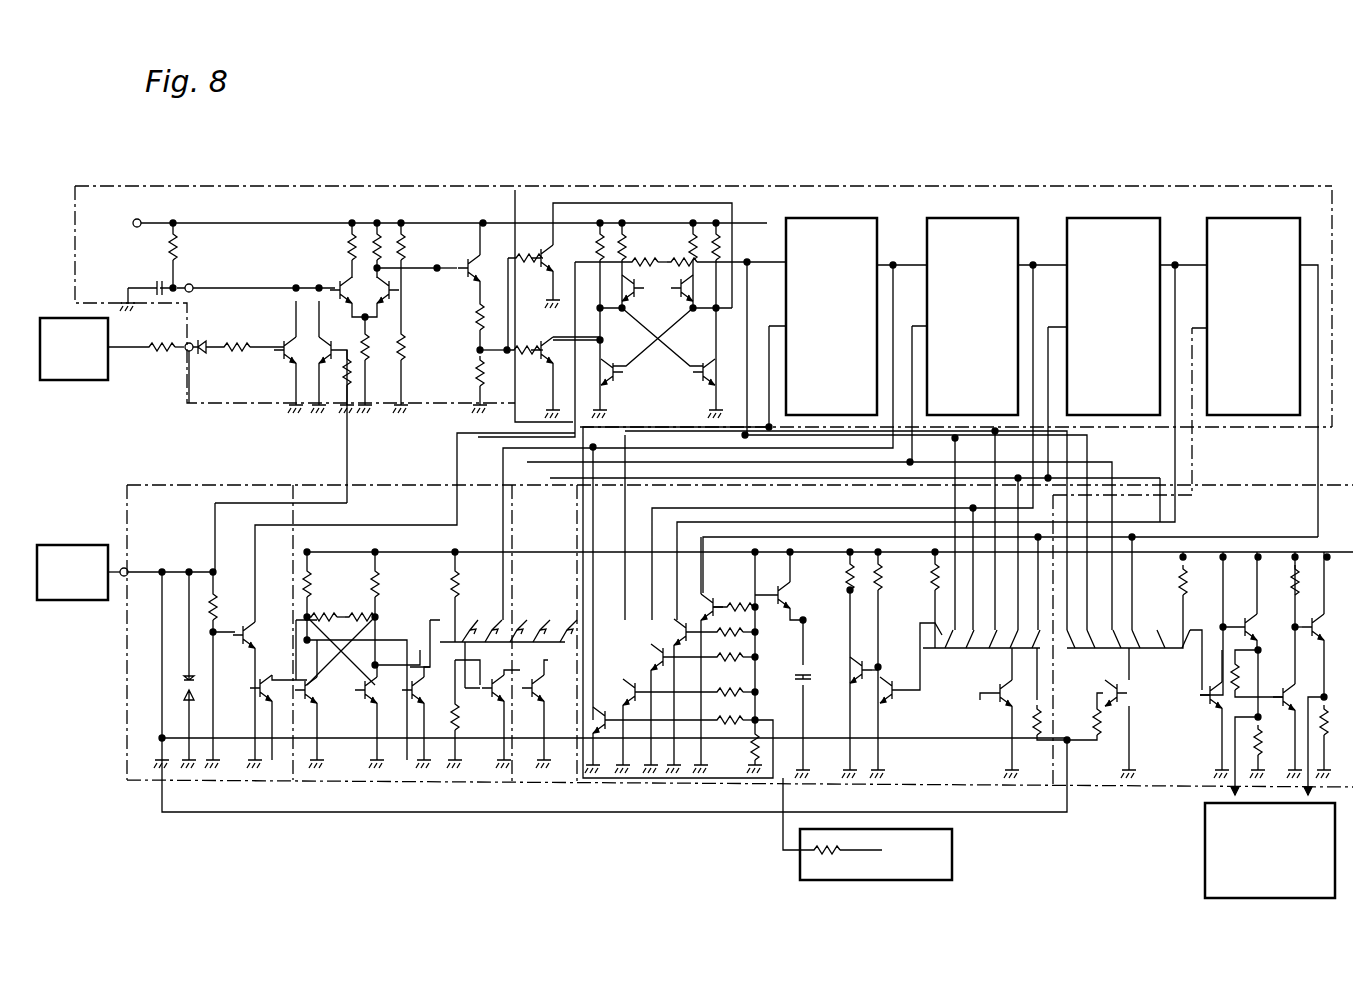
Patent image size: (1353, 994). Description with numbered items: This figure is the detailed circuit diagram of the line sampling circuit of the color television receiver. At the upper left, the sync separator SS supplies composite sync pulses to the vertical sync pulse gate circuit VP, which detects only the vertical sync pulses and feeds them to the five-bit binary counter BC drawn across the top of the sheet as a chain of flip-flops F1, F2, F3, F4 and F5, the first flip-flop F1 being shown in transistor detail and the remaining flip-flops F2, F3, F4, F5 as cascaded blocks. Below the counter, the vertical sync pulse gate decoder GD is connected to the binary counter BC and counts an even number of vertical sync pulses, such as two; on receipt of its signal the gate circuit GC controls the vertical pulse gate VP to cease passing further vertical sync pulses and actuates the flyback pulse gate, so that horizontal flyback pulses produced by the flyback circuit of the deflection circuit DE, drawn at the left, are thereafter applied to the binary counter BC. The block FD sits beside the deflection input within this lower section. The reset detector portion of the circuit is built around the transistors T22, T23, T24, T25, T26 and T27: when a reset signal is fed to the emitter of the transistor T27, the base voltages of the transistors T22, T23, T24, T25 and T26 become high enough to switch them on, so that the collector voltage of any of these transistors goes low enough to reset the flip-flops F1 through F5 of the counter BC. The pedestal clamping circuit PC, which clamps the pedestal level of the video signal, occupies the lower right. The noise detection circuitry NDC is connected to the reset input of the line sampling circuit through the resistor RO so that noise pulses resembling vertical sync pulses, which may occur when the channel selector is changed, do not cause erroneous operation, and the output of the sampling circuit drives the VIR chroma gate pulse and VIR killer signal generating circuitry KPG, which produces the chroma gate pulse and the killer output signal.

The vertical sync pulse gate circuit VP is at (462, 178).
The 5-bit binary counter BC is at (1060, 192).
The flip-flop F1 is at (632, 318).
The flip-flop F2 is at (843, 200).
The flip-flop F3 is at (986, 200).
The flip-flop F4 is at (1129, 200).
The flip-flop F5 is at (1264, 200).
The sync separator SS is at (92, 380).
The deflection circuit DE is at (60, 600).
The field detector FD is at (232, 785).
The gate circuit GC is at (352, 785).
The vertical sync pulse gate decoder GD is at (480, 785).
The transistor T22 is at (600, 735).
The transistor T23 is at (628, 705).
The transistor T24 is at (658, 670).
The transistor T25 is at (690, 645).
The transistor T26 is at (723, 602).
The transistor T27 is at (782, 600).
The pedestal clamping circuit PC is at (1103, 790).
The resistor RO is at (846, 865).
The noise detection circuitry NDC is at (875, 880).
The VIR chroma gate pulse and VIR killer signal generating circuitry KPG is at (1205, 884).